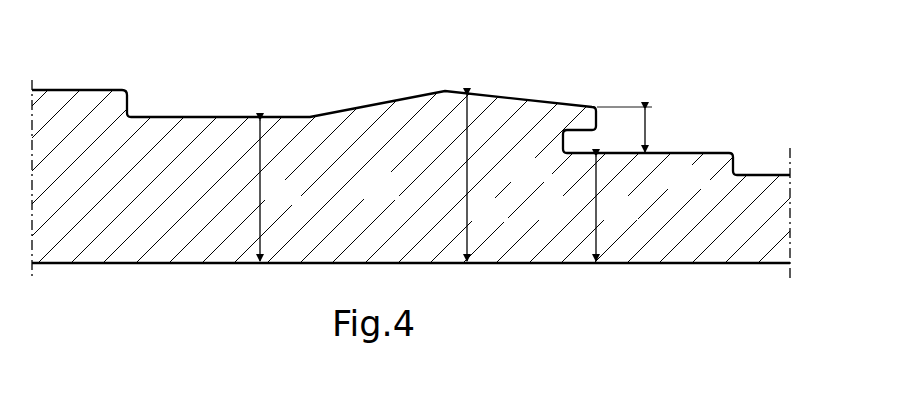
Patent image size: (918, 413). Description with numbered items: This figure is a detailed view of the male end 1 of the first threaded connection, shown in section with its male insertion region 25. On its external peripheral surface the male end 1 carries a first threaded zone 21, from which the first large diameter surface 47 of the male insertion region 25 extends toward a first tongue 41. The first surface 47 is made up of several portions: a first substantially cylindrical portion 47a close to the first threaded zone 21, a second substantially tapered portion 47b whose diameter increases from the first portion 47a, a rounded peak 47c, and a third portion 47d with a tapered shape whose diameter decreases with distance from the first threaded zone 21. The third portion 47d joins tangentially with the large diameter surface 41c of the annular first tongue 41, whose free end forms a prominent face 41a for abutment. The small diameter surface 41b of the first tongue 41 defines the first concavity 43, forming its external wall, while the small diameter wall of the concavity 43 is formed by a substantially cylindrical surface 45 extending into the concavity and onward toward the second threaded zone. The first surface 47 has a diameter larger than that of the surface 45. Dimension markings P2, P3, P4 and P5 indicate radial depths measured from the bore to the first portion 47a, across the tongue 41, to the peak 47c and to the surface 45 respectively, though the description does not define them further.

The male end 1 is at (57, 300).
The first threaded zone 21 is at (70, 98).
The male insertion region 25 is at (396, 197).
The first tongue 41 is at (598, 110).
The prominent face 41a is at (600, 128).
The small diameter surface 41b is at (578, 133).
The large diameter surface 41c is at (587, 105).
The first concavity 43 is at (573, 147).
The substantially cylindrical surface 45 is at (700, 155).
The first large diameter surface 47 is at (315, 110).
The first substantially cylindrical portion 47a is at (172, 117).
The second substantially tapered portion 47b is at (348, 103).
The rounded peak 47c is at (445, 92).
The third portion 47d is at (507, 98).
The dimension P2 is at (276, 190).
The dimension P3 is at (639, 129).
The dimension P4 is at (483, 178).
The dimension P5 is at (613, 208).